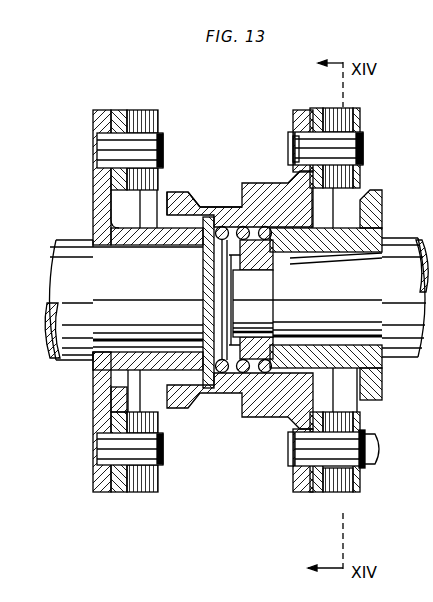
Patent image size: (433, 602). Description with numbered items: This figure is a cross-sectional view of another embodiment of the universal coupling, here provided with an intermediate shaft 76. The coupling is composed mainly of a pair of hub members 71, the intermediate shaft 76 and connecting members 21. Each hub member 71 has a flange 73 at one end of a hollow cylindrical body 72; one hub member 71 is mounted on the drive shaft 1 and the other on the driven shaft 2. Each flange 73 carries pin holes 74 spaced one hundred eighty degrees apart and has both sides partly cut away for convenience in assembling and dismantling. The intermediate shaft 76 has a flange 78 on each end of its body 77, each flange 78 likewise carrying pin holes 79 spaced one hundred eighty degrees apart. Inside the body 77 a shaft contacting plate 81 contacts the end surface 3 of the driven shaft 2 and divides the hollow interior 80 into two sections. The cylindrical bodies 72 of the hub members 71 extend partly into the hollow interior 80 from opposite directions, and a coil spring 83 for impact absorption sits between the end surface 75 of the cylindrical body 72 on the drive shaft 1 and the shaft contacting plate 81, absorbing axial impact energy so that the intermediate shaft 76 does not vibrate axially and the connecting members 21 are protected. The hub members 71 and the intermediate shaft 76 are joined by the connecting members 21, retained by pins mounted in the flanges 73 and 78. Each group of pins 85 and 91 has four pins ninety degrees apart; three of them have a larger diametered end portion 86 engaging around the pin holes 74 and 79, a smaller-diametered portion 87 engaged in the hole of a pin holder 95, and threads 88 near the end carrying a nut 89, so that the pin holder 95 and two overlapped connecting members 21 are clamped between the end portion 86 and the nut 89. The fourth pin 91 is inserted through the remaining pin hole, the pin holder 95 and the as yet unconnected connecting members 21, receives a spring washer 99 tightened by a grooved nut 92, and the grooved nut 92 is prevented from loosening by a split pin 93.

The drive shaft 1 is at (403, 358).
The driven shaft 2 is at (83, 362).
The end surface 3 is at (204, 305).
The connecting members 21 is at (130, 395).
The hub members 71 is at (381, 188).
The cylindrical body 72 is at (153, 246).
The flange 73 is at (93, 200).
The pin holes 74 is at (97, 150).
The end surface 75 is at (264, 272).
The intermediate shaft 76 is at (222, 195).
The body 77 is at (202, 206).
The flange 78 is at (293, 177).
The pin holes 79 is at (292, 130).
The hollow interior 80 is at (185, 192).
The shaft contacting plate 81 is at (207, 286).
The coil spring 83 is at (226, 381).
The pins 85 is at (318, 132).
The larger diametered end portion 86 is at (293, 140).
The smaller-diametered portion 87 is at (360, 153).
The threads 88 is at (363, 139).
The nut 89 is at (360, 122).
The pin 91 is at (293, 460).
The grooved nut 92 is at (366, 469).
The split pin 93 is at (382, 452).
The pin holder 95 is at (119, 493).
The spring washer 99 is at (318, 493).